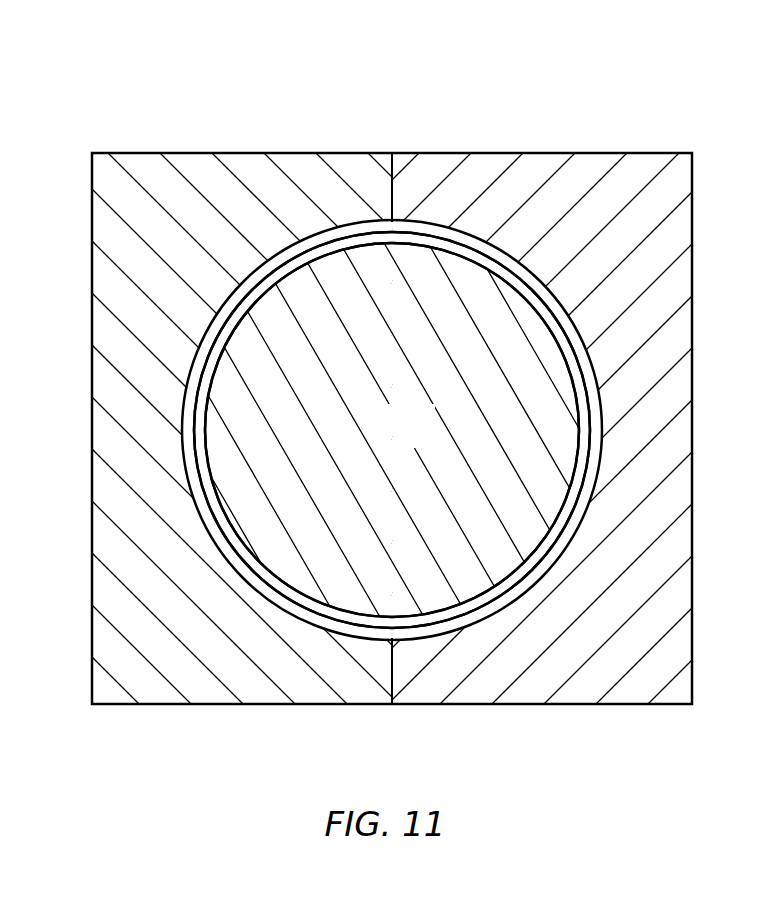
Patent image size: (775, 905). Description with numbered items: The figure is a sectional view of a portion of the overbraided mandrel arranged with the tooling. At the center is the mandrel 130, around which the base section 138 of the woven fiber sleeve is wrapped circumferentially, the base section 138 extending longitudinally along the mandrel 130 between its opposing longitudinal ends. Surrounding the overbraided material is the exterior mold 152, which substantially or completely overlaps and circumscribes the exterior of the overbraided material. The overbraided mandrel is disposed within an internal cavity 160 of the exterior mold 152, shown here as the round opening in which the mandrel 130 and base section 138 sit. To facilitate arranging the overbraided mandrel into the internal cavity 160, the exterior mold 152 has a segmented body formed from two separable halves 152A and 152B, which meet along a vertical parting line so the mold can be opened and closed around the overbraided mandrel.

The exterior mold 152 is at (386, 386).
The separable half of the exterior mold 152A is at (92, 230).
The separable half of the exterior mold 152B is at (692, 211).
The internal cavity 160 is at (302, 242).
The base section 138 is at (520, 277).
The mandrel 130 is at (427, 437).